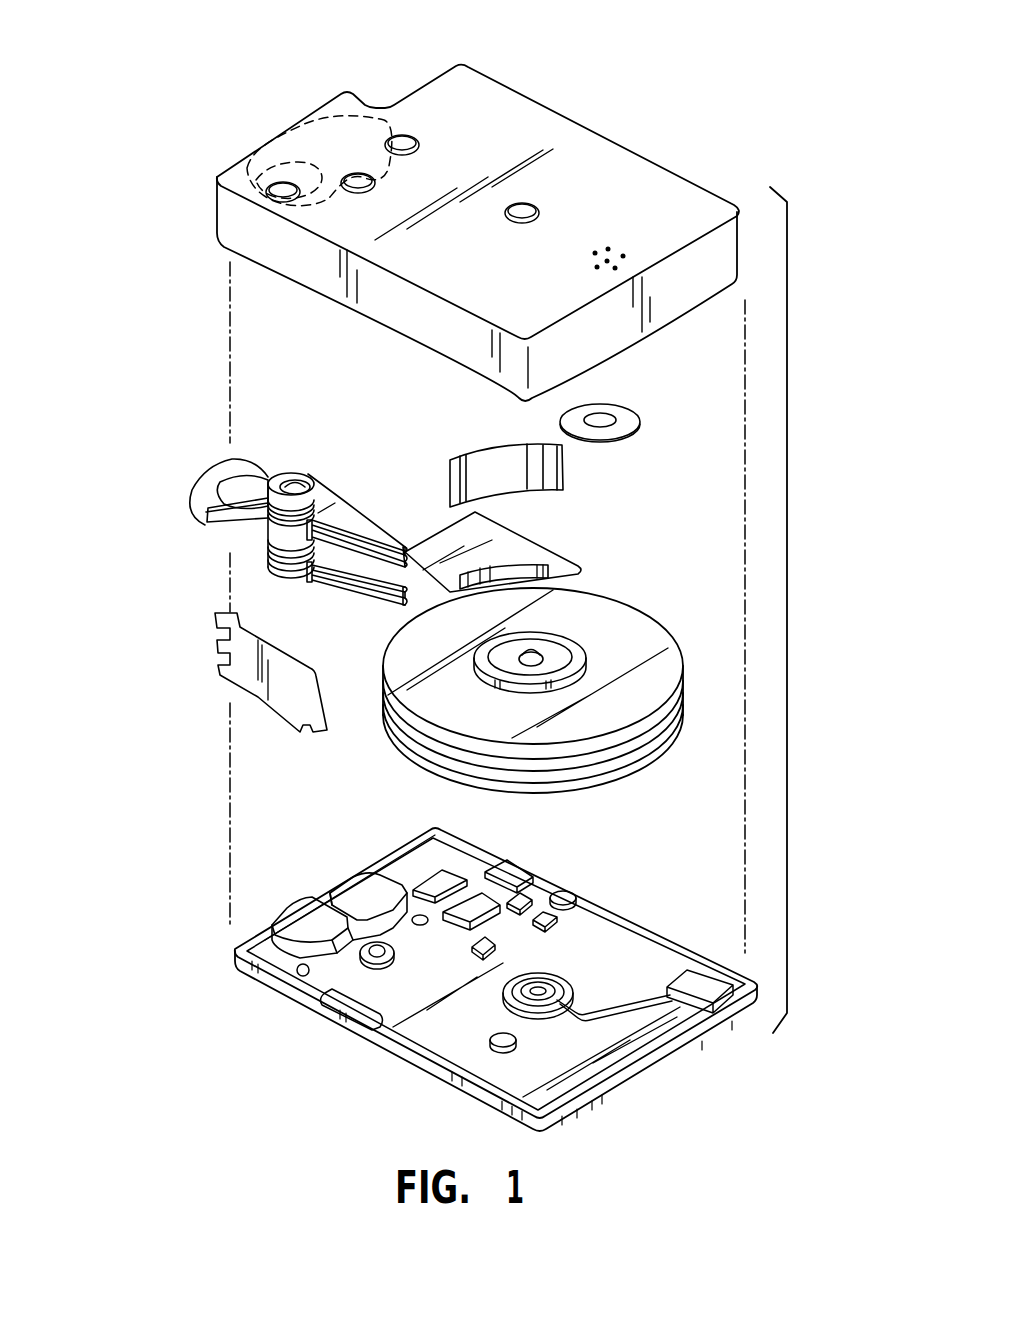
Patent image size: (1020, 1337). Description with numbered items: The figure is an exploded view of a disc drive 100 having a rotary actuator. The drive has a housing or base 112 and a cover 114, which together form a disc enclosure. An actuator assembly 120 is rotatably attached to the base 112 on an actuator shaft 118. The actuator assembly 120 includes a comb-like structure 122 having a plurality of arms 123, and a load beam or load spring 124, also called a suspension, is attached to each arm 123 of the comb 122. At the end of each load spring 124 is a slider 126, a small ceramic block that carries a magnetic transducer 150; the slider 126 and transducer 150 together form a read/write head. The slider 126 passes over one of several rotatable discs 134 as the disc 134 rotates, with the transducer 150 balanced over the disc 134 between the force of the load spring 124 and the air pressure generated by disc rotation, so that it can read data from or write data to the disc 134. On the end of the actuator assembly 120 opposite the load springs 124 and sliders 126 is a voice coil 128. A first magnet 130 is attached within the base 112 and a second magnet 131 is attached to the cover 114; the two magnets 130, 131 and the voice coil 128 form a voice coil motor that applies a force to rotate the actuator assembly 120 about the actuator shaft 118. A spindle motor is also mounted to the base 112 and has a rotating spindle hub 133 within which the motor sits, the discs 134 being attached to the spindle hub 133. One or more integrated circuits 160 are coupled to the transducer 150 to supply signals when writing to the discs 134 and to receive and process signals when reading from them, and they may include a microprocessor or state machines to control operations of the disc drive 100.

The disc drive 100 is at (652, 76).
The base 112 is at (653, 953).
The cover 114 is at (632, 175).
The actuator shaft 118 is at (298, 483).
The actuator assembly 120 is at (247, 533).
The comb-like structure 122 is at (320, 583).
The arms 123 is at (345, 492).
The load springs 124 is at (362, 520).
The slider 126 is at (406, 548).
The voice coil 128 is at (207, 480).
The first magnet 130 is at (292, 917).
The second magnet 131 is at (318, 125).
The spindle hub 133 is at (533, 652).
The discs 134 is at (650, 637).
The magnetic transducer 150 is at (433, 547).
The integrated circuits 160 is at (508, 872).